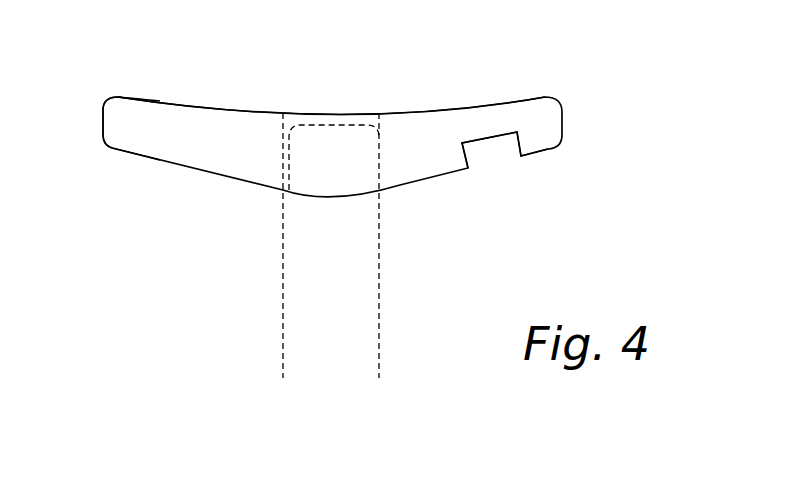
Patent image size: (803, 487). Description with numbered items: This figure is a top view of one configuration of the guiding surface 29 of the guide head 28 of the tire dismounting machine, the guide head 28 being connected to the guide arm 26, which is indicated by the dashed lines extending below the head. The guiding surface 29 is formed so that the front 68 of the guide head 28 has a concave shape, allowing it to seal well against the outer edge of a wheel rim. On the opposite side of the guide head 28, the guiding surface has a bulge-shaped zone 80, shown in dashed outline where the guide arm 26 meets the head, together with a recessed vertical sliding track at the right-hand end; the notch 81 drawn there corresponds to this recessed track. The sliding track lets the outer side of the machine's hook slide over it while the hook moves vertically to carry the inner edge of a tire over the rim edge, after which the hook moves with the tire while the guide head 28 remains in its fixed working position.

The guide head 28 is at (233, 112).
The front 68 is at (402, 92).
The guiding surface 29 is at (159, 188).
The notch 81 is at (498, 160).
The bulge-shaped zone 80 is at (332, 180).
The guide arm 26 is at (347, 318).